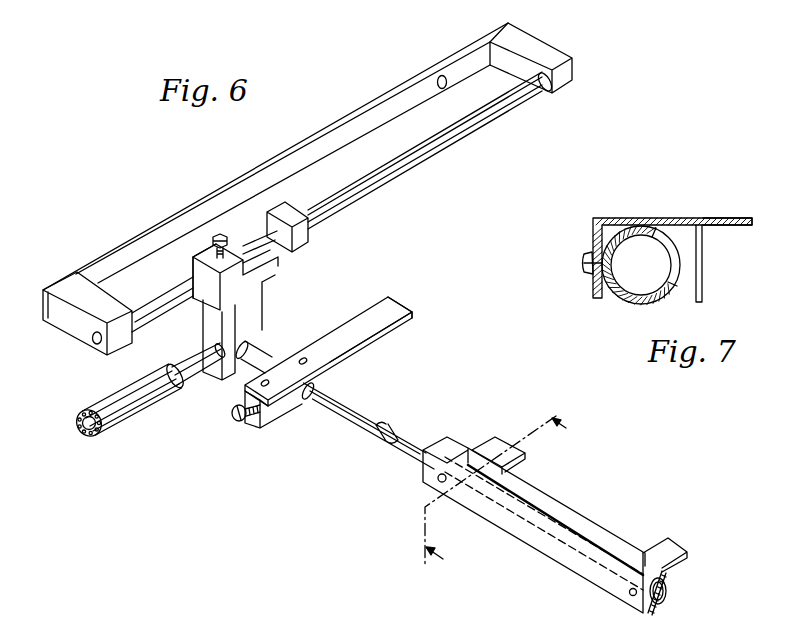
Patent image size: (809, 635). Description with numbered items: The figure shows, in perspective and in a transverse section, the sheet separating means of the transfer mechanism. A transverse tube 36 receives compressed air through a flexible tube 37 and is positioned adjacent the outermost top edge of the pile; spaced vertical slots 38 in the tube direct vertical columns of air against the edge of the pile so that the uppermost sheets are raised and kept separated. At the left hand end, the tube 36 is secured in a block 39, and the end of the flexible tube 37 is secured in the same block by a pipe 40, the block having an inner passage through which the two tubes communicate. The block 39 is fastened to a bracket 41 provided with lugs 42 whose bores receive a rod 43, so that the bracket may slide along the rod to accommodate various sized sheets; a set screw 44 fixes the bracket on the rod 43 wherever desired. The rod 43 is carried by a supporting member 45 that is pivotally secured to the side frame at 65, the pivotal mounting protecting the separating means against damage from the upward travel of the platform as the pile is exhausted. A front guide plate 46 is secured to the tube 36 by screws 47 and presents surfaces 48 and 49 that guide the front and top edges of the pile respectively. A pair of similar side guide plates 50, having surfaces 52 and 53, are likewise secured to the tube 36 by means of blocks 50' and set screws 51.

In FIG. 6, the transverse tube 36 is at (350, 427).
In FIG. 7, the transverse tube 36 is at (632, 300).
In FIG. 6, the flexible tube 37 is at (120, 420).
In FIG. 6, the vertical slots 38 is at (667, 588).
In FIG. 7, the vertical slots 38 is at (676, 286).
In FIG. 6, the block 39 is at (252, 315).
In FIG. 6, the pipe 40 is at (188, 380).
In FIG. 6, the bracket 41 is at (296, 262).
In FIG. 6, the lugs 42 is at (287, 210).
In FIG. 6, the rod 43 is at (373, 185).
In FIG. 6, the set screw 44 is at (228, 237).
In FIG. 6, the supporting member 45 is at (331, 141).
In FIG. 6, the front guide plate 46 is at (545, 547).
In FIG. 7, the front guide plate 46 is at (613, 216).
In FIG. 6, the screws 47 is at (438, 480).
In FIG. 7, the screws 47 is at (583, 268).
In FIG. 6, the surface 48 is at (590, 526).
In FIG. 7, the surface 48 is at (703, 275).
In FIG. 6, the surface 49 is at (690, 550).
In FIG. 7, the surface 49 is at (725, 228).
In FIG. 6, the side guide plates 50 is at (328, 334).
In FIG. 6, the blocks 50' is at (273, 422).
In FIG. 6, the set screws 51 is at (238, 422).
In FIG. 6, the surface 52 is at (366, 347).
In FIG. 6, the surface 53 is at (401, 325).
In FIG. 6, the pivot 65 is at (443, 75).